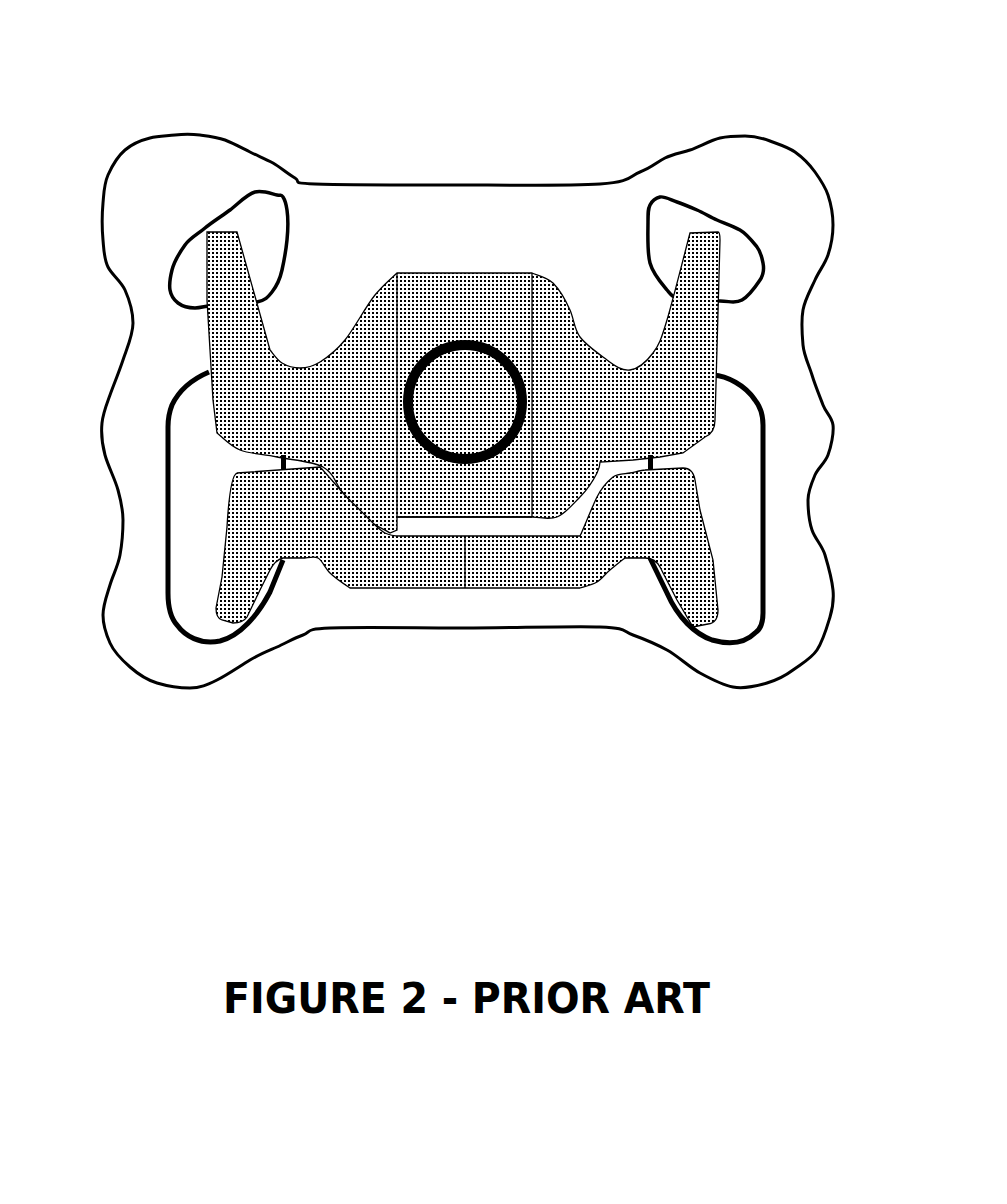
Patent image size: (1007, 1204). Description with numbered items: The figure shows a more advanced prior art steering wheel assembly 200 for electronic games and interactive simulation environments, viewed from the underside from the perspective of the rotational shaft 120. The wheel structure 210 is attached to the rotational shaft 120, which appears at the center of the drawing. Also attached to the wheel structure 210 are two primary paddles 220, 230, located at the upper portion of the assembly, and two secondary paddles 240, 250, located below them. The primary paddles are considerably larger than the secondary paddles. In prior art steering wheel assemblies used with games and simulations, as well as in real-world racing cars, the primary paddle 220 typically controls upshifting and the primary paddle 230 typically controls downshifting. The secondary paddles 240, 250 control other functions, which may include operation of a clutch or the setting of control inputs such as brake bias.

The steering wheel assembly 200 is at (199, 48).
The wheel structure 210 is at (277, 152).
The rotational shaft 120 is at (467, 398).
The primary paddle 220 is at (200, 267).
The primary paddle 230 is at (703, 227).
The secondary paddle 240 is at (210, 610).
The secondary paddle 250 is at (725, 617).